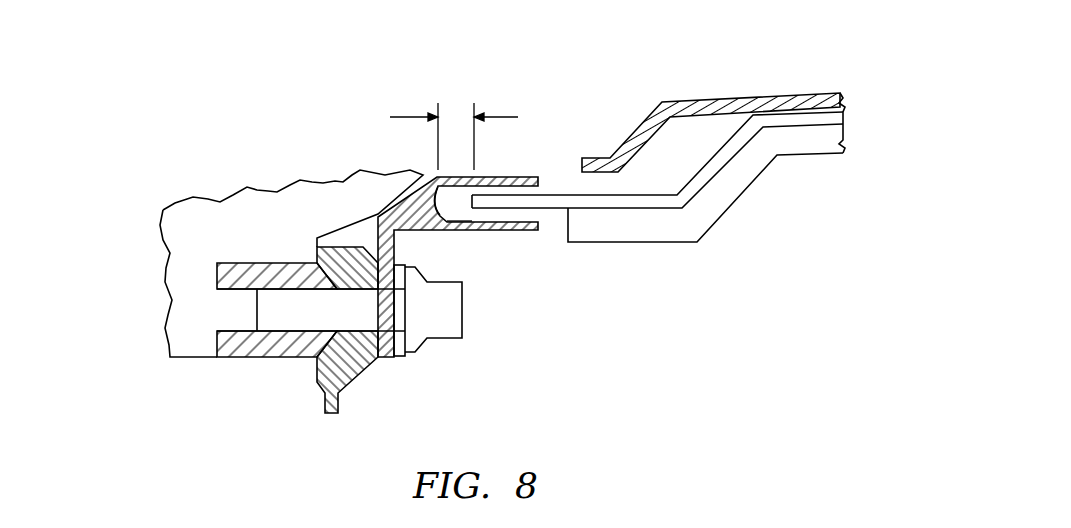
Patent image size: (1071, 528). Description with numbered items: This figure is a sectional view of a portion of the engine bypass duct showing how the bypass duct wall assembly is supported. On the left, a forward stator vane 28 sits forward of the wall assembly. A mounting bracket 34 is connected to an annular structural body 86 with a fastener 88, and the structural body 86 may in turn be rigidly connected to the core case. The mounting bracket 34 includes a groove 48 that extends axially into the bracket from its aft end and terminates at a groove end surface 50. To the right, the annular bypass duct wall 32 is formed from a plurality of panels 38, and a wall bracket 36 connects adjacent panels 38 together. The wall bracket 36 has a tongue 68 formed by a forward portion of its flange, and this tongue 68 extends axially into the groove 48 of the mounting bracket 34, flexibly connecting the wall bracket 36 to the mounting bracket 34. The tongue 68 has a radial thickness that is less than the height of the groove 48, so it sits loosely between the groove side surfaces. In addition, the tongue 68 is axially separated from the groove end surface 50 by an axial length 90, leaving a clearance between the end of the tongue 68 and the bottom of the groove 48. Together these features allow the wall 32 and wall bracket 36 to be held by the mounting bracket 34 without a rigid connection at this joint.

The forward stator vane 28 is at (253, 208).
The mounting bracket 34 is at (377, 237).
The axial length 90 is at (410, 117).
The tongue 68 is at (553, 195).
The panel 38 is at (698, 102).
The annular bypass duct wall 32 is at (778, 95).
The wall bracket 36 is at (750, 183).
The groove end surface 50 is at (441, 205).
The groove 48 is at (463, 209).
The annular structural body 86 is at (325, 404).
The fastener 88 is at (445, 338).